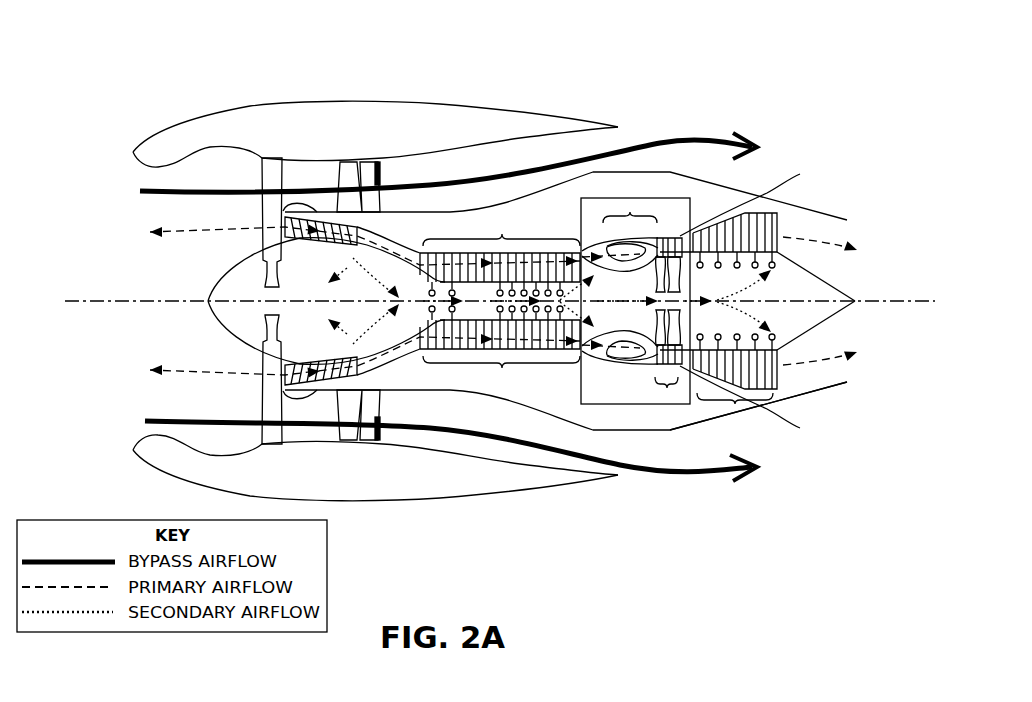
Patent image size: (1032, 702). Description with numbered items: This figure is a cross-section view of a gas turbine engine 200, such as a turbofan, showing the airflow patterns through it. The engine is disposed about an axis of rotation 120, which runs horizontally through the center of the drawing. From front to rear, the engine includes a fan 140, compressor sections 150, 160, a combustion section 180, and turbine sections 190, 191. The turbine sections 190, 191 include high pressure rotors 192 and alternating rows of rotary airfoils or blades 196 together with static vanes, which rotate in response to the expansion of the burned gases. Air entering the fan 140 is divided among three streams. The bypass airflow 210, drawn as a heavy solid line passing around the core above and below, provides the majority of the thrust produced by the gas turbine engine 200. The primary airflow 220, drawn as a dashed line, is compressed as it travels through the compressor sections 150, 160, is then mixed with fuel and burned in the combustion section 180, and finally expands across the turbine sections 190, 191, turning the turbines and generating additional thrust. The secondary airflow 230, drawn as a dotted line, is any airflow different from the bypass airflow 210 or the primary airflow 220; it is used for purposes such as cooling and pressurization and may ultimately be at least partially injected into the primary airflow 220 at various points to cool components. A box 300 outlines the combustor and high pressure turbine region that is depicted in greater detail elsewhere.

The axis of rotation 120 is at (887, 303).
The fan 140 is at (247, 157).
The compressor section 150 is at (330, 205).
The compressor section 160 is at (502, 233).
The combustion section 180 is at (630, 214).
The turbine section 190 is at (667, 388).
The turbine section 191 is at (737, 404).
The high pressure rotors 192 is at (828, 162).
The rotary airfoils or blades 196 is at (763, 373).
The gas turbine engine 200 is at (144, 58).
The bypass airflow 210 is at (150, 190).
The primary airflow 220 is at (152, 232).
The secondary airflow 230 is at (287, 247).
The box 300 is at (676, 236).